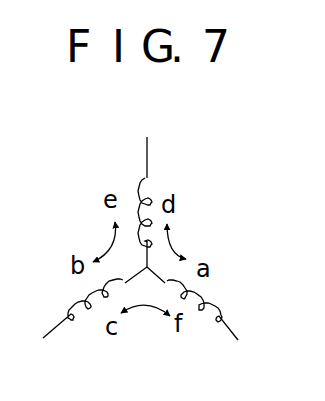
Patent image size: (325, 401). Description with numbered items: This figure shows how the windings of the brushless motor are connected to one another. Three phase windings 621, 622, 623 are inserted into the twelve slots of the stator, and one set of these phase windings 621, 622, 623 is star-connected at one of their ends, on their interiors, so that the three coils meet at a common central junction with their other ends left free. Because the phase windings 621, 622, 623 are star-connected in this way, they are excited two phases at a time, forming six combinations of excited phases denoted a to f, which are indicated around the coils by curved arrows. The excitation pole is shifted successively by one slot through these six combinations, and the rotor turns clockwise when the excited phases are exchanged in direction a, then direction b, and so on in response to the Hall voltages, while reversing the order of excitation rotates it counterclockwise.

The phase winding 621 is at (148, 189).
The phase winding 622 is at (231, 302).
The phase winding 623 is at (85, 310).